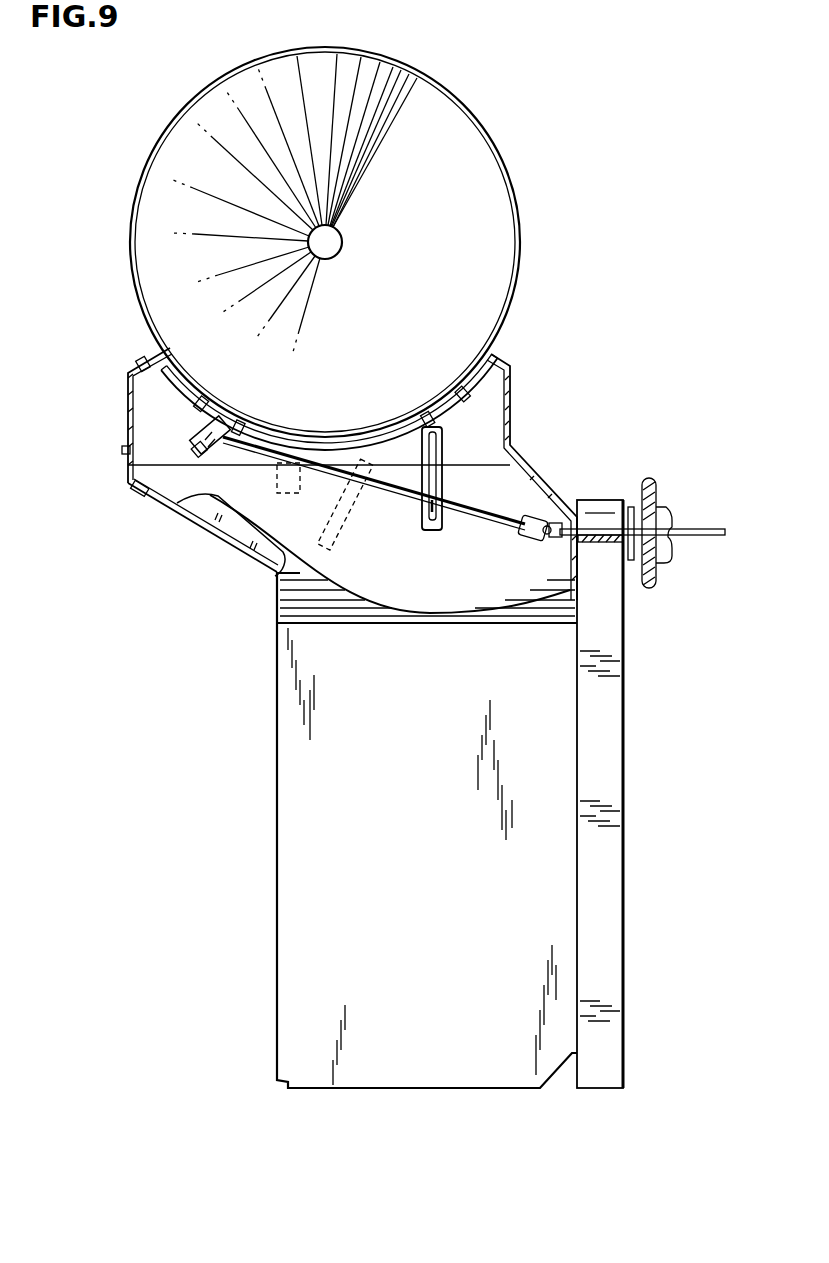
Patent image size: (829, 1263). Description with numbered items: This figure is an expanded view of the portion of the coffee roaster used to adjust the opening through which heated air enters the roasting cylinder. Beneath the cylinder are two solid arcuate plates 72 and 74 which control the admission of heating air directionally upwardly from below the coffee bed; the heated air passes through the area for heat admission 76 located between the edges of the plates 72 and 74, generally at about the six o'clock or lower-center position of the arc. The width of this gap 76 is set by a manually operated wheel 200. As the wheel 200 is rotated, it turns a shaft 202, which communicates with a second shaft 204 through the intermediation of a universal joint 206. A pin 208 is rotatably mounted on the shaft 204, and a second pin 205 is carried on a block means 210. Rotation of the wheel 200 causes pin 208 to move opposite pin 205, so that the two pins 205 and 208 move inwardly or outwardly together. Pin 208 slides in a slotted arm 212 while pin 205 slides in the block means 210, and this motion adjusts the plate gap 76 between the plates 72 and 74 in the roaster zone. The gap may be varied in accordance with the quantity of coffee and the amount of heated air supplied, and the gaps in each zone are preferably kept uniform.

The solid arcuate plate 72 is at (190, 381).
The solid arcuate plate 74 is at (408, 426).
The area for heat admission 76 is at (331, 447).
The manually operated wheel 200 is at (660, 491).
The shaft 202 is at (605, 521).
The shaft 204 is at (490, 525).
The pin 205 is at (197, 428).
The universal joint 206 is at (552, 540).
The pin 208 is at (433, 503).
The block means 210 is at (200, 449).
The slotted arm 212 is at (428, 451).